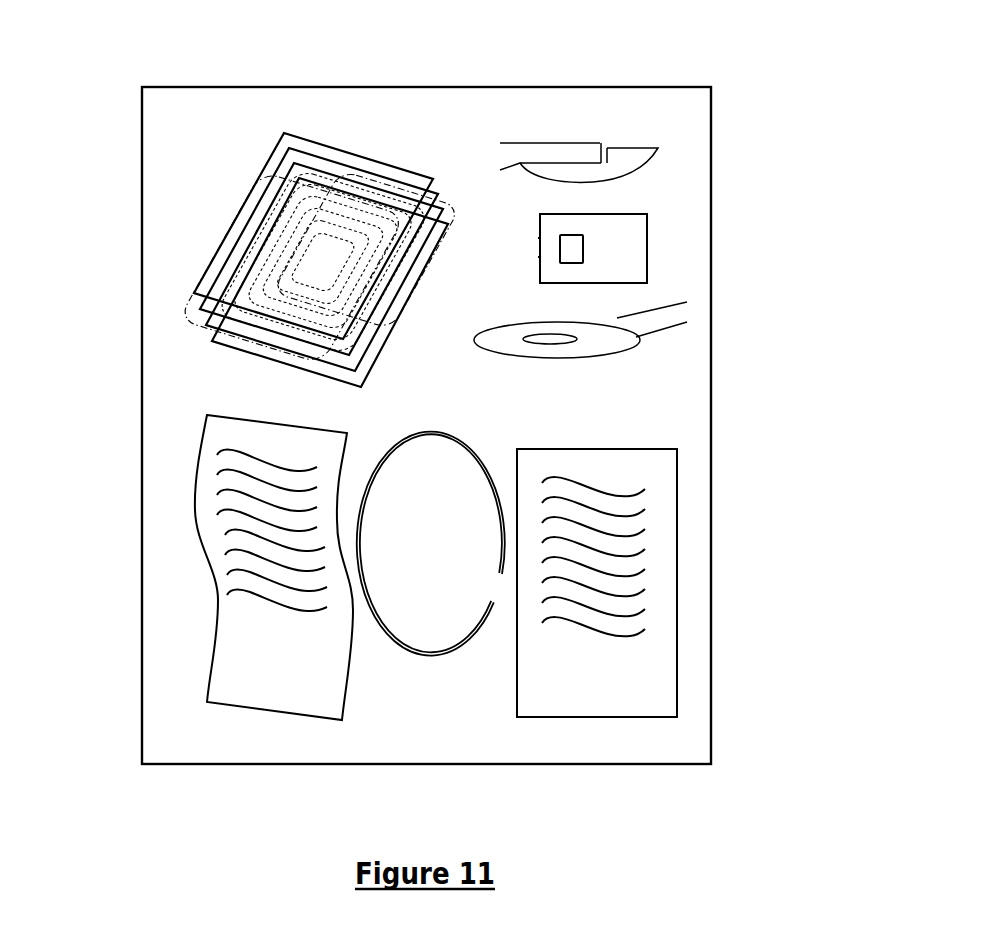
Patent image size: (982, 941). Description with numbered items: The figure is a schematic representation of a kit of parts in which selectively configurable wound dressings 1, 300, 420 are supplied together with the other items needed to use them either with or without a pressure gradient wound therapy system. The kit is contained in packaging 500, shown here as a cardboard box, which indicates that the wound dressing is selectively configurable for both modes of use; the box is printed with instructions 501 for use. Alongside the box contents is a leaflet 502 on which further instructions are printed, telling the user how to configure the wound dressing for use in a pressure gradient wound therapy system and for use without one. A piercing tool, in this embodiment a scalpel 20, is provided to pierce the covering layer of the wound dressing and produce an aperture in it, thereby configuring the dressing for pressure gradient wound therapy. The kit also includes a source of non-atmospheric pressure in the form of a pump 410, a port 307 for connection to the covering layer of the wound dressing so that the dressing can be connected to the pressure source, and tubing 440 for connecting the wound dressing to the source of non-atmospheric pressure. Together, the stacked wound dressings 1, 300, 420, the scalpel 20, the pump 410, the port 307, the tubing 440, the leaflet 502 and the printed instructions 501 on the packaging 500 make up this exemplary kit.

The packaging 500 is at (360, 83).
The wound dressing 1 is at (251, 255).
The wound dressing 300 is at (251, 260).
The wound dressing 420 is at (208, 203).
The scalpel 20 is at (673, 145).
The pump 410 is at (592, 248).
The port 307 is at (547, 338).
The leaflet 502 is at (238, 655).
The tubing 440 is at (420, 668).
The instructions 501 is at (623, 687).